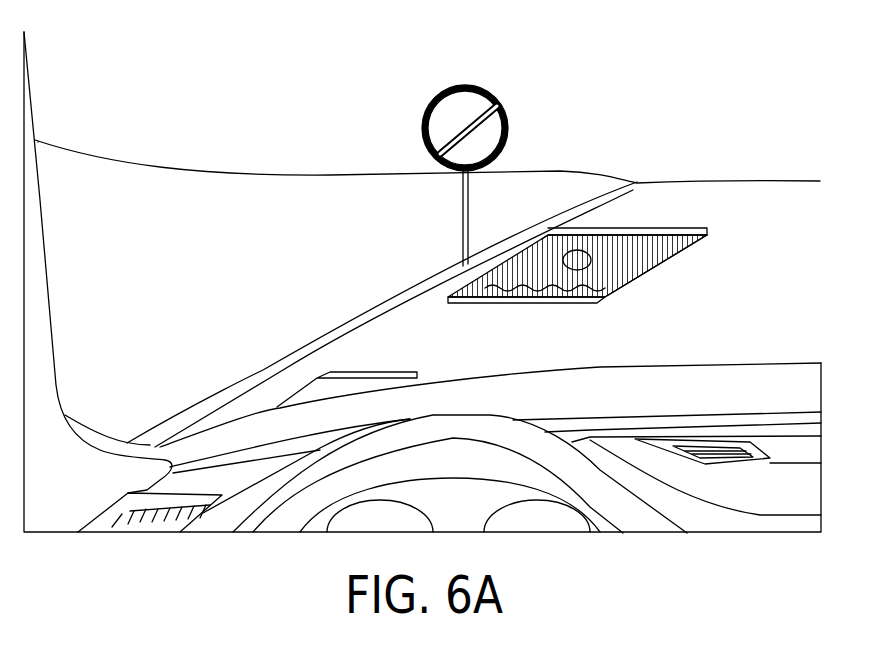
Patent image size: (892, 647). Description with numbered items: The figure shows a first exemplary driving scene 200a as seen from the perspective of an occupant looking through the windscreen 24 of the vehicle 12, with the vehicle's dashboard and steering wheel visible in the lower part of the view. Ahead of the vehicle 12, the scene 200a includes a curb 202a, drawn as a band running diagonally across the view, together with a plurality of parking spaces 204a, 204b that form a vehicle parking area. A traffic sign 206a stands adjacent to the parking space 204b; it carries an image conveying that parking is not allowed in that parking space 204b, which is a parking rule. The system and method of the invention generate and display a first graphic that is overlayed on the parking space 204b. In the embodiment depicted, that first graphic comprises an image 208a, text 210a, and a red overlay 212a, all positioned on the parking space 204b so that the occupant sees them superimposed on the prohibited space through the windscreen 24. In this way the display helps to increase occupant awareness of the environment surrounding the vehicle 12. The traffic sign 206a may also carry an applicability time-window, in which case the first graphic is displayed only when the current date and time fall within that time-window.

The first exemplary driving scene 200a is at (183, 98).
The traffic sign 206a is at (497, 110).
The image 208a is at (578, 250).
The red overlay 212a is at (648, 252).
The parking space 204b is at (655, 273).
The text 210a is at (583, 290).
The parking space 204a is at (614, 271).
The curb 202a is at (342, 325).
The windscreen 24 is at (158, 342).
The vehicle 12 is at (705, 397).